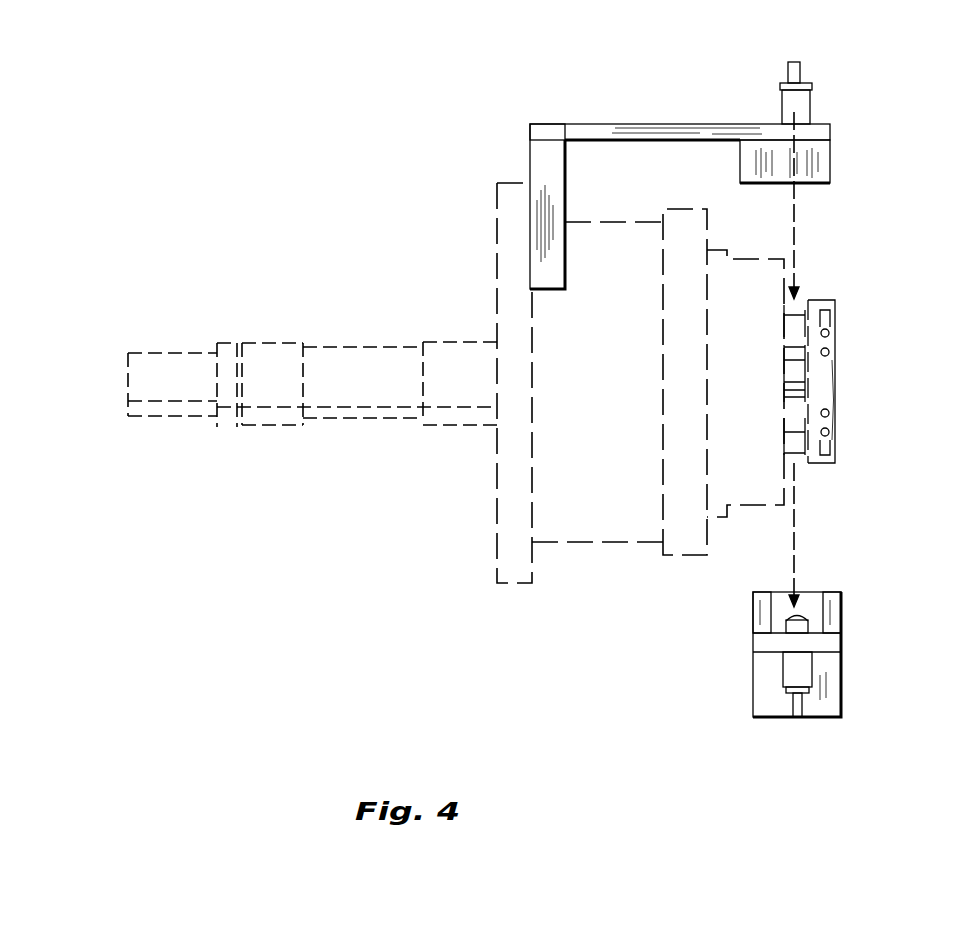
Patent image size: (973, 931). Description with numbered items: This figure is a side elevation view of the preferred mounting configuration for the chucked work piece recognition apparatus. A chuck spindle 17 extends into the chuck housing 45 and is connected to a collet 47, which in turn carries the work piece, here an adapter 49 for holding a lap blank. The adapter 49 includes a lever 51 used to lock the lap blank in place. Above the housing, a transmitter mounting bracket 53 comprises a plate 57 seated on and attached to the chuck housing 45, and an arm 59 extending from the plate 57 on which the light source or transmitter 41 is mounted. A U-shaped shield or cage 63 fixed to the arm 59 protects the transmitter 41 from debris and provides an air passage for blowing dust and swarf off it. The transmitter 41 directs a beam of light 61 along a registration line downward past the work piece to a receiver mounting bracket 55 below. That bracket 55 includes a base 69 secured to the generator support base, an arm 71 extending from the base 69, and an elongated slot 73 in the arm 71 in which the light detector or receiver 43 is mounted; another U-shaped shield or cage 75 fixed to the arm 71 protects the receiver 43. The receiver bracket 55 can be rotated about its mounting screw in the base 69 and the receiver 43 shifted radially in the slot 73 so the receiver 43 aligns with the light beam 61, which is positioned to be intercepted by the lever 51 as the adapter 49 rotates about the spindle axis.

The chuck spindle 17 is at (355, 375).
The light source or transmitter 41 is at (785, 103).
The light detector or receiver 43 is at (802, 667).
The chuck housing 45 is at (821, 375).
The collet 47 is at (792, 333).
The adapter 49 is at (832, 305).
The lever 51 is at (797, 372).
The transmitter mounting bracket 53 is at (645, 148).
The receiver mounting bracket 55 is at (768, 658).
The plate 57 is at (543, 152).
The arm 59 is at (624, 126).
The beam of light 61 is at (797, 236).
The U-shaped shield or cage 63 is at (747, 162).
The base 69 is at (837, 700).
The arm 71 is at (762, 642).
The elongated slot 73 is at (777, 645).
The U-shaped shield or cage 75 is at (838, 607).